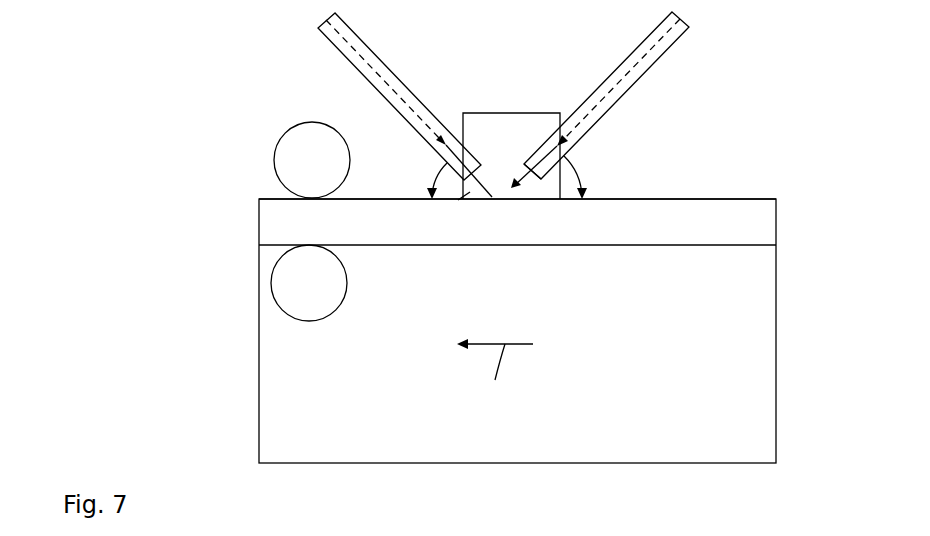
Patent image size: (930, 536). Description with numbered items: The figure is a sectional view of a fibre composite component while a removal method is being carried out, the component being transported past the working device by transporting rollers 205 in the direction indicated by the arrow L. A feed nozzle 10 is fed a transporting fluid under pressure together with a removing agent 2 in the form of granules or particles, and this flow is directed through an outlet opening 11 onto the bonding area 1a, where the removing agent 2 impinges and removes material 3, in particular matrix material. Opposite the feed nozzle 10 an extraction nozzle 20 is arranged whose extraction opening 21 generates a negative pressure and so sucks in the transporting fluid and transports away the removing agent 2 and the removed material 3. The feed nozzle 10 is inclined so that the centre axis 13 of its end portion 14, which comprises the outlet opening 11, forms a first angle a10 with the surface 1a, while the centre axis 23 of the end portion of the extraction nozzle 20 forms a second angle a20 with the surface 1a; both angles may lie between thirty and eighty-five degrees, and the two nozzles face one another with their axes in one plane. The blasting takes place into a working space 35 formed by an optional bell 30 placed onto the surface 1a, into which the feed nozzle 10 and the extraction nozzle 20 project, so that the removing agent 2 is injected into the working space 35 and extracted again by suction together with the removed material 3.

The removing agent 2 is at (532, 180).
The removed material 3 is at (467, 182).
The bonding area 1a is at (712, 196).
The transporting rollers 205 is at (282, 165).
The bell 30 is at (507, 113).
The working space 35 is at (510, 153).
The extraction nozzle 20 is at (330, 40).
The centre axis of end portion of extraction nozzle 23 is at (396, 83).
The extraction opening 21 is at (458, 200).
The second angle a20 is at (428, 168).
The feed nozzle 10 is at (665, 53).
The centre axis of end portion of feed nozzle 13 is at (610, 93).
The end portion of feed nozzle 14 is at (513, 186).
The outlet opening 11 is at (528, 180).
The first angle a10 is at (584, 166).
The feed direction L is at (495, 376).